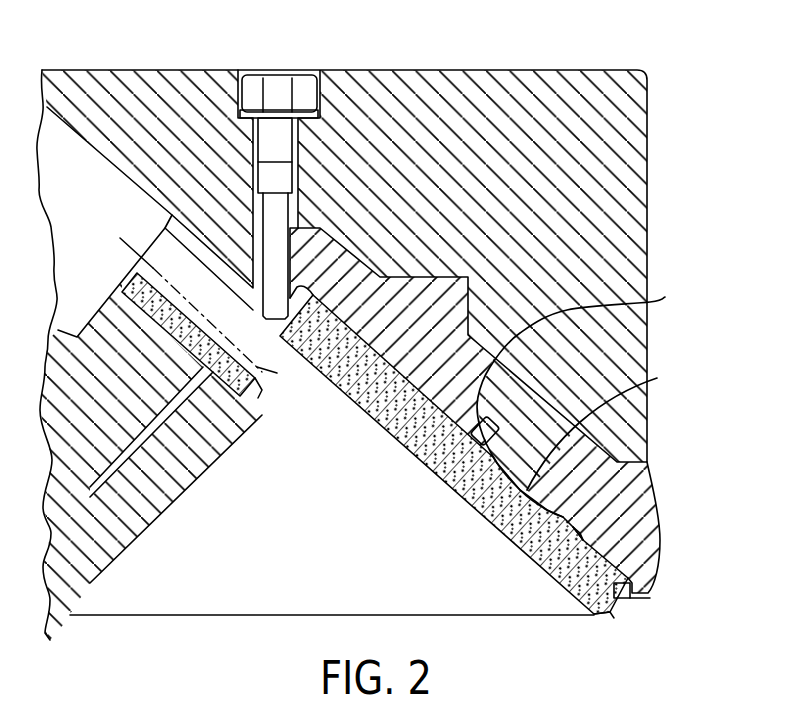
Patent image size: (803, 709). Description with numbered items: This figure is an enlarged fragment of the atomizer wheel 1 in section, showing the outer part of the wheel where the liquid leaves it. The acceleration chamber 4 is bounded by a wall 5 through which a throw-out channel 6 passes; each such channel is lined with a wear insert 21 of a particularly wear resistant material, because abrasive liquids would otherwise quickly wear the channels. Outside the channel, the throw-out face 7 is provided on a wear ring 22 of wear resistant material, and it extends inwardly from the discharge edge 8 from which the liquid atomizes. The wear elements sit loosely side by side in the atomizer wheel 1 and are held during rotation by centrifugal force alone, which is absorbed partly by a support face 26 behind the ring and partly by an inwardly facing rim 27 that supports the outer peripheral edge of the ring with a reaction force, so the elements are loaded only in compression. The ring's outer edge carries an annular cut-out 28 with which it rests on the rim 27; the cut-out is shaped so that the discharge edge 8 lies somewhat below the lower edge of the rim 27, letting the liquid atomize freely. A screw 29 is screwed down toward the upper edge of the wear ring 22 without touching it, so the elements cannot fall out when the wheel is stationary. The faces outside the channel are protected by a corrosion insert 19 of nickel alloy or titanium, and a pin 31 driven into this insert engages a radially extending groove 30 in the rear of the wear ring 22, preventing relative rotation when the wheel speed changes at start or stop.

The atomizer wheel 1 is at (615, 57).
The acceleration chamber 4 is at (72, 180).
The wall 5 is at (66, 626).
The throw-out channel 6 is at (262, 367).
The throw-out face 7 is at (456, 497).
The discharge edge 8 is at (611, 613).
The corrosion insert 19 is at (157, 503).
The wear insert 21 is at (227, 382).
The wear ring 22 is at (556, 556).
The support face 26 is at (598, 533).
The inwardly facing rim 27 is at (634, 600).
The annular cut-out 28 is at (633, 593).
The screw 29 is at (284, 133).
The radially extending groove 30 is at (657, 378).
The pin 31 is at (656, 296).